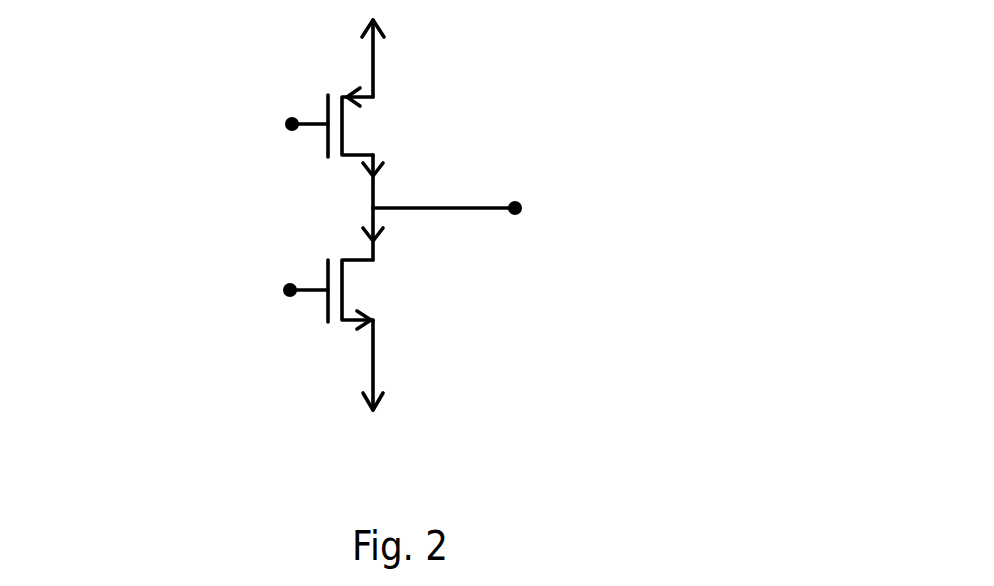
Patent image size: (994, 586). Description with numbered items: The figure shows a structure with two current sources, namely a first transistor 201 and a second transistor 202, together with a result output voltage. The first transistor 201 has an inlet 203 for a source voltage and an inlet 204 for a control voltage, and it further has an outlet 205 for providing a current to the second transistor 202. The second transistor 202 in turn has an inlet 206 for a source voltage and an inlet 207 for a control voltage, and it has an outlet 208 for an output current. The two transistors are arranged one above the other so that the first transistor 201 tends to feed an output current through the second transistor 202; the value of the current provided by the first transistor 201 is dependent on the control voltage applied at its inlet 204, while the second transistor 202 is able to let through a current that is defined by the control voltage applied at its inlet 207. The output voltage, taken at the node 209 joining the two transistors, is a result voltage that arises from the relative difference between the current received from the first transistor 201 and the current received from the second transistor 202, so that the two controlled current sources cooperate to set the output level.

The first transistor 201 is at (380, 127).
The second transistor 202 is at (380, 290).
The inlet for a source voltage 203 is at (380, 73).
The inlet for a control voltage 204 is at (292, 124).
The outlet 205 is at (370, 176).
The inlet for a source voltage 206 is at (377, 343).
The inlet for a control voltage 207 is at (290, 290).
The outlet for an output current 208 is at (370, 238).
The common output node 209 is at (515, 208).